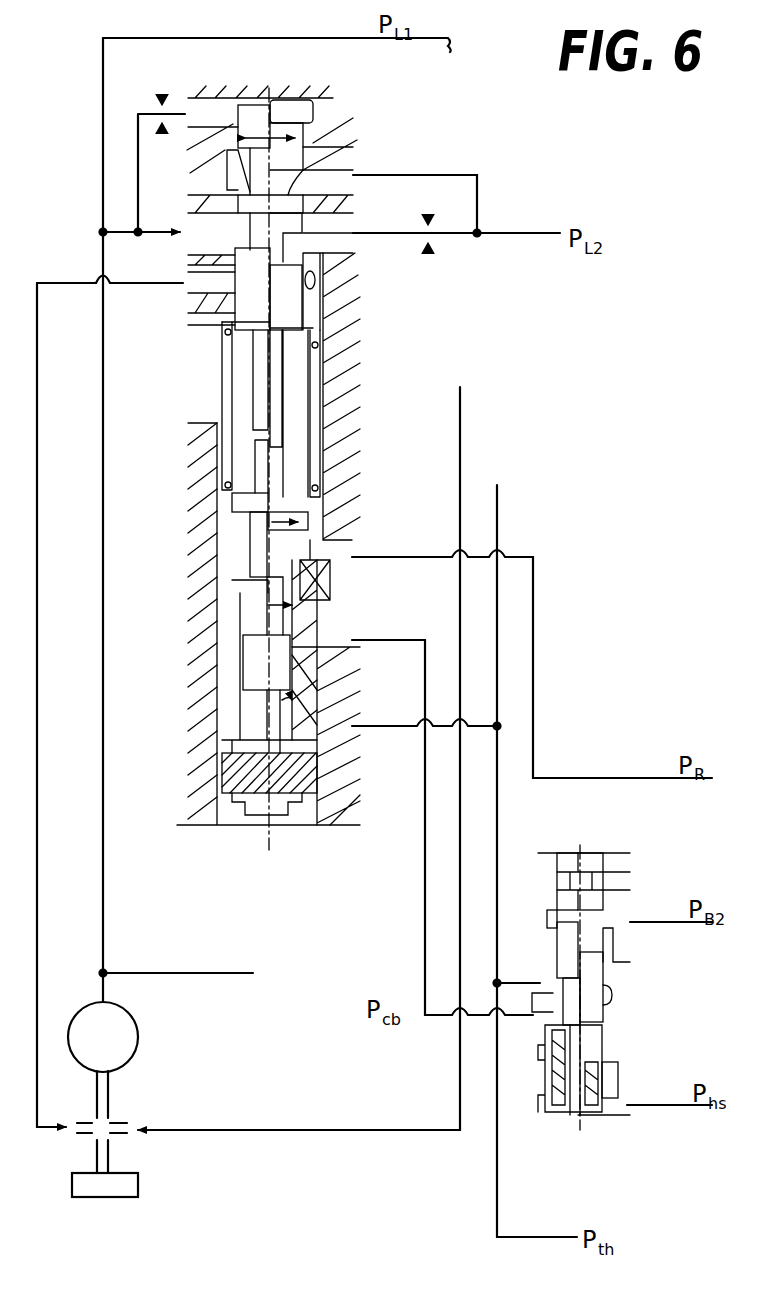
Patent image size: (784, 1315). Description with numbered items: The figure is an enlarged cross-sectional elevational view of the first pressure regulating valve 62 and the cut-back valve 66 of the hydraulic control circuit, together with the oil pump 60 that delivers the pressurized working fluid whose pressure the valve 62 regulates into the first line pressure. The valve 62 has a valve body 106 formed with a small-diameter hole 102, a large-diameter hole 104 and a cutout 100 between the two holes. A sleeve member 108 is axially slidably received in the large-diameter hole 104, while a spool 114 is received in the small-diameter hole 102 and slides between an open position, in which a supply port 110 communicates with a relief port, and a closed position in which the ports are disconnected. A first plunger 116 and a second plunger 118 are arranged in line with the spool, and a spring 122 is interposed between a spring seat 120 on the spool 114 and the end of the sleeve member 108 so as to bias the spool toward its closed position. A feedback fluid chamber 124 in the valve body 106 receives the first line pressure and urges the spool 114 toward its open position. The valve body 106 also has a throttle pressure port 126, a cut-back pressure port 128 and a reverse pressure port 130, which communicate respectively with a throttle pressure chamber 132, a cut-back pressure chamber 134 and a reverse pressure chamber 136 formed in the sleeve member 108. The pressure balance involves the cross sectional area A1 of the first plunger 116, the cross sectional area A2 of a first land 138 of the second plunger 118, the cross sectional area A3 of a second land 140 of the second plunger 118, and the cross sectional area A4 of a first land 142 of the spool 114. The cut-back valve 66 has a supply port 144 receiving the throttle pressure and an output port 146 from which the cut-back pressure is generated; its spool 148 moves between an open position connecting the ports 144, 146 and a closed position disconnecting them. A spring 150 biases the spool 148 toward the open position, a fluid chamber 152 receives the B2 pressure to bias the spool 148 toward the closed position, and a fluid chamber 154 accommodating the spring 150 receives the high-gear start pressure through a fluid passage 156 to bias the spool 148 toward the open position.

The oil pump 60 is at (113, 1058).
The first pressure regulating valve 62 is at (208, 862).
The cut-back valve 66 is at (562, 1138).
The cutout 100 is at (323, 382).
The small-diameter hole 102 is at (298, 316).
The large-diameter hole 104 is at (318, 598).
The valve body 106 is at (323, 434).
The sleeve member 108 is at (218, 670).
The supply port 110 is at (200, 242).
The spool 114 is at (283, 248).
The first plunger 116 is at (240, 703).
The second plunger 118 is at (260, 572).
The spring seat 120 is at (223, 322).
The spring 122 is at (227, 333).
The feedback fluid chamber 124 is at (302, 120).
The throttle pressure port 126 is at (333, 748).
The cut-back pressure port 128 is at (328, 652).
The reverse pressure port 130 is at (325, 570).
The throttle pressure chamber 132 is at (243, 734).
The cut-back pressure chamber 134 is at (237, 618).
The reverse pressure chamber 136 is at (221, 528).
The first land 138 is at (250, 592).
The second land 140 is at (221, 500).
The first land 142 is at (248, 106).
The supply port 144 is at (537, 983).
The output port 146 is at (535, 1022).
The spool 148 is at (587, 1023).
The spring 150 is at (580, 1120).
The fluid chamber 152 is at (605, 921).
The fluid chamber 154 is at (553, 1123).
The fluid passage 156 is at (663, 1107).
The cross sectional area of the first plunger A1 is at (325, 712).
The cross sectional area of the first land of the second plunger A2 is at (313, 604).
The cross sectional area of the second land of the second plunger A3 is at (318, 518).
The cross sectional area of the first land of the spool A4 is at (300, 140).